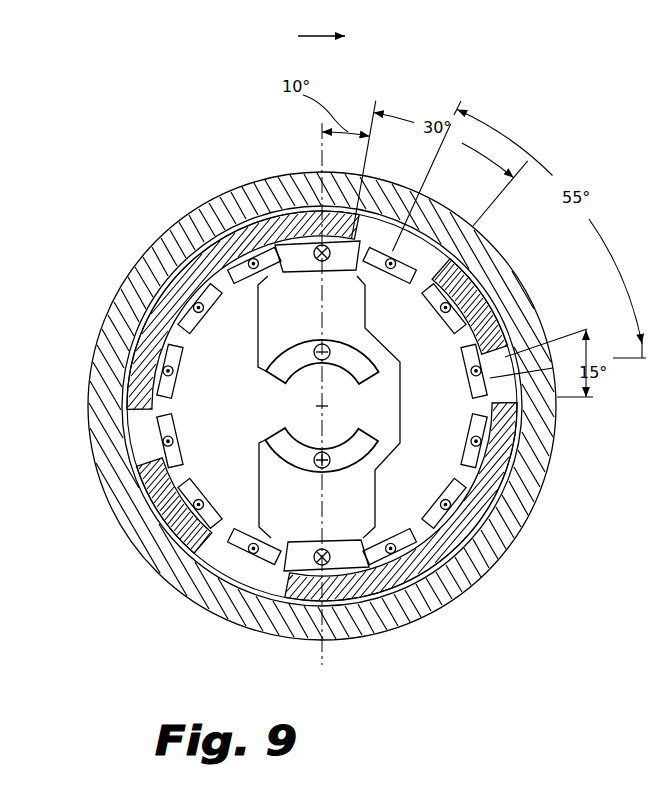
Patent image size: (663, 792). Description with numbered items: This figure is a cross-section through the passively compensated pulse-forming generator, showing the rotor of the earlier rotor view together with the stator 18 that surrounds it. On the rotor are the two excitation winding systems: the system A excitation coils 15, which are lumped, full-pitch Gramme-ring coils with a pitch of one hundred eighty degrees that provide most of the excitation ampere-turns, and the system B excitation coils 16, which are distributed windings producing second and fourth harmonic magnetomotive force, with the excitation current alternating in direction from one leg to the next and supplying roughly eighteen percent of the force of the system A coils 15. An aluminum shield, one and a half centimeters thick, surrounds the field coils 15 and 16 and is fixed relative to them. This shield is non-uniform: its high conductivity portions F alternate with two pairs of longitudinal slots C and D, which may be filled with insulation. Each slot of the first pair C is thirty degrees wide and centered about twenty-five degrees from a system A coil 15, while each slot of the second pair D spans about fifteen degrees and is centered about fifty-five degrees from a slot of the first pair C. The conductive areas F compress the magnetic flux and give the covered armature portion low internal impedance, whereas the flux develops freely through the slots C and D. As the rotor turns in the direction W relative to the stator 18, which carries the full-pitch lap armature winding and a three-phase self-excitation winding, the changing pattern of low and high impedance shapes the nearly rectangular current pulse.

The system A excitation coils 15 is at (297, 273).
The system B excitation coils 16 is at (173, 381).
The stator 18 is at (108, 329).
The system A is at (258, 327).
The system B is at (400, 398).
The first pair of longitudinal slots C is at (418, 253).
The second pair of longitudinal slots D is at (503, 367).
The high conductivity portion of the shield F is at (190, 263).
The direction of rotation W is at (321, 20).